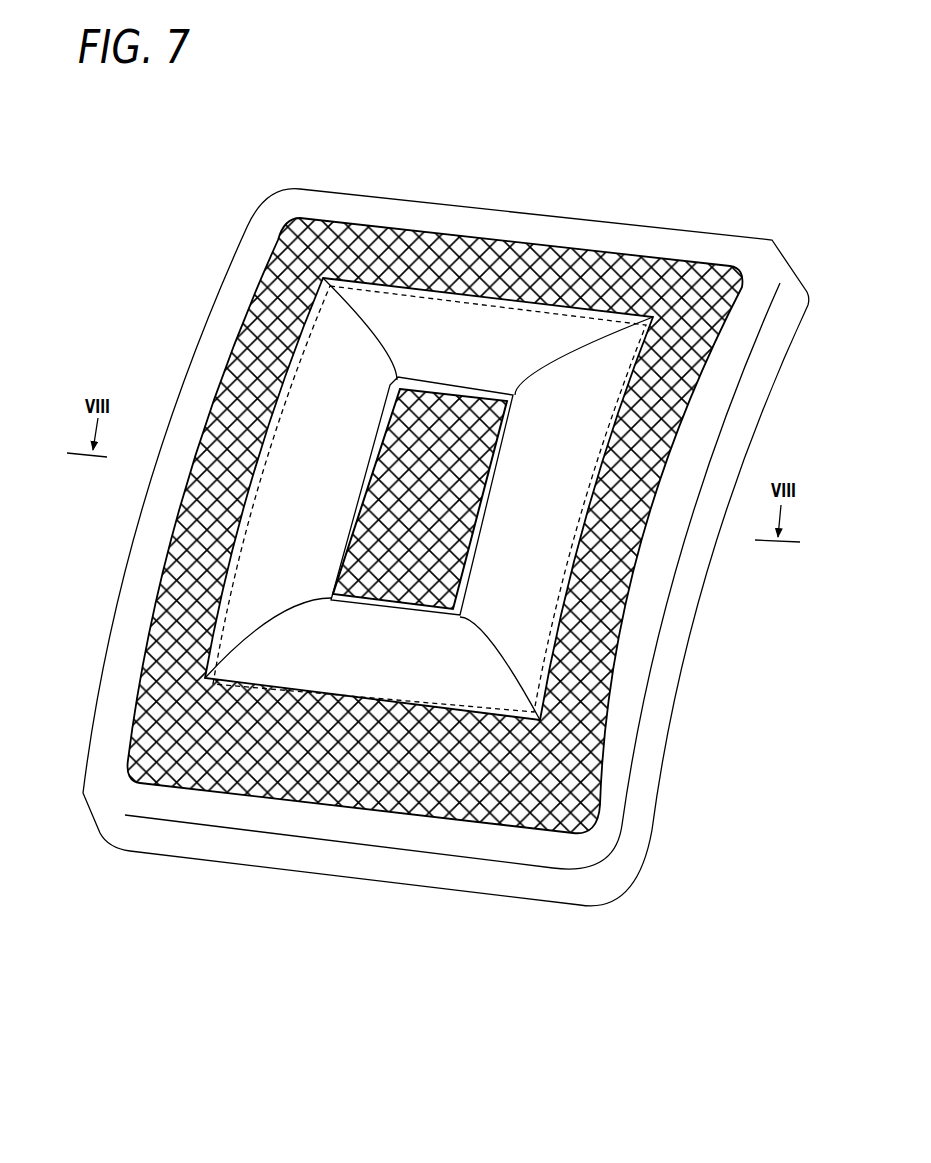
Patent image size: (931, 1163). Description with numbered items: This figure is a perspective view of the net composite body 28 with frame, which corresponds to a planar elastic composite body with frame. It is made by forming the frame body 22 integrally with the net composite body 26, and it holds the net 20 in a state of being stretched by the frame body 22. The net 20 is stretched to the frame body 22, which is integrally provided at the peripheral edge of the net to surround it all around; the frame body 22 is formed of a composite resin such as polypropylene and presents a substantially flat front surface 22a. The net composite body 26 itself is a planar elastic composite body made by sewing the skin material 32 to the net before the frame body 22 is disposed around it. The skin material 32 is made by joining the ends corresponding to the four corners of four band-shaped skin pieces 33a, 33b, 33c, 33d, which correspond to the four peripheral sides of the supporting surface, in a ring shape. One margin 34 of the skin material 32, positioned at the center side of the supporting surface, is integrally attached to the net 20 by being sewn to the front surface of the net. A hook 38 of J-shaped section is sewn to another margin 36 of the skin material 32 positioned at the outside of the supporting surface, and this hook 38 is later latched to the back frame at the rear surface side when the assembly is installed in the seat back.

The net 20 is at (603, 720).
The frame body 22 is at (250, 236).
The front surface 22a is at (212, 333).
The net composite body 26 is at (746, 718).
The net composite body with frame 28 is at (197, 277).
The skin material 32 is at (517, 610).
The skin piece 33a is at (505, 337).
The skin piece 33b is at (577, 433).
The skin piece 33c is at (375, 663).
The skin piece 33d is at (310, 405).
The margin 34 is at (200, 597).
The margin 36 is at (483, 543).
The hook 38 is at (338, 545).